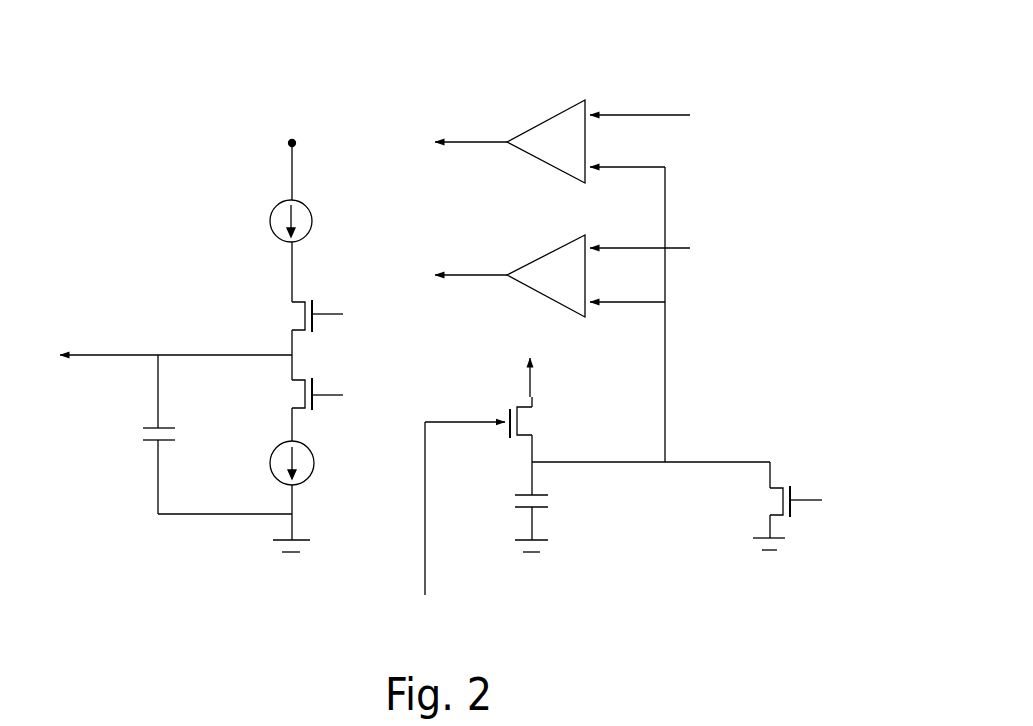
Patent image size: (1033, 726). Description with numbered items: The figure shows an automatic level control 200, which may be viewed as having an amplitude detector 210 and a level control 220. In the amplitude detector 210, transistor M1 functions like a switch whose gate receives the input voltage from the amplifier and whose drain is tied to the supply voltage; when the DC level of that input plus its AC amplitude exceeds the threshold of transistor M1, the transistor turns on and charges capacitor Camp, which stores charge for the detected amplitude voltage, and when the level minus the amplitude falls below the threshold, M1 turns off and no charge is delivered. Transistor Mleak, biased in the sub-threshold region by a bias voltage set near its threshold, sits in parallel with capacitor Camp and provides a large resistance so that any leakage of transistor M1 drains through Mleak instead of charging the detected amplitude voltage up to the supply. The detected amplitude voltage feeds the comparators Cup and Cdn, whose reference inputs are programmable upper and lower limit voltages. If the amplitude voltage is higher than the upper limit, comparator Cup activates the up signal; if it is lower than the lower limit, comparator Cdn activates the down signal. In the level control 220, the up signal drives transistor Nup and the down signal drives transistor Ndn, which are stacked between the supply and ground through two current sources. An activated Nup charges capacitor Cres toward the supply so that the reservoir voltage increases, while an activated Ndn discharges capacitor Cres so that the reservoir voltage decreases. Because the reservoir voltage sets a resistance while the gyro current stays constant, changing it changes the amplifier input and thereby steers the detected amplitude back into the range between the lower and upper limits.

The automatic level control 200 is at (157, 601).
The amplitude detector 210 is at (664, 58).
The level control 220 is at (186, 165).
The transistor Nup is at (295, 310).
The transistor Ndn is at (295, 390).
The capacitor Cres is at (178, 431).
The comparator Cup is at (547, 121).
The comparator Cdn is at (545, 253).
The transistor M1 is at (534, 424).
The capacitor Camp is at (550, 498).
The transistor Mleak is at (769, 496).